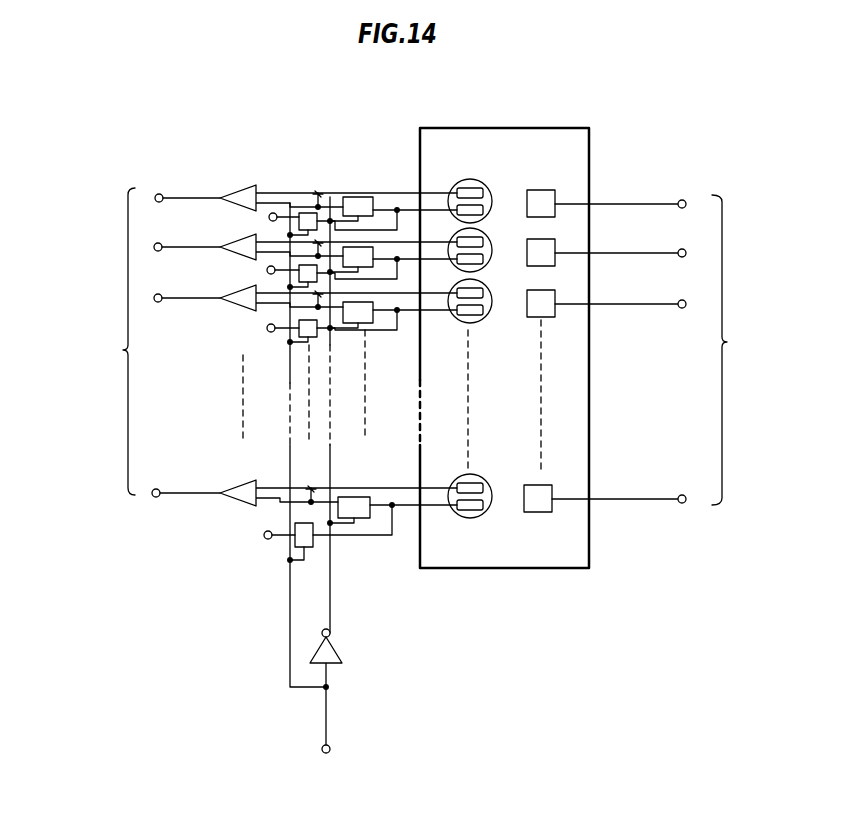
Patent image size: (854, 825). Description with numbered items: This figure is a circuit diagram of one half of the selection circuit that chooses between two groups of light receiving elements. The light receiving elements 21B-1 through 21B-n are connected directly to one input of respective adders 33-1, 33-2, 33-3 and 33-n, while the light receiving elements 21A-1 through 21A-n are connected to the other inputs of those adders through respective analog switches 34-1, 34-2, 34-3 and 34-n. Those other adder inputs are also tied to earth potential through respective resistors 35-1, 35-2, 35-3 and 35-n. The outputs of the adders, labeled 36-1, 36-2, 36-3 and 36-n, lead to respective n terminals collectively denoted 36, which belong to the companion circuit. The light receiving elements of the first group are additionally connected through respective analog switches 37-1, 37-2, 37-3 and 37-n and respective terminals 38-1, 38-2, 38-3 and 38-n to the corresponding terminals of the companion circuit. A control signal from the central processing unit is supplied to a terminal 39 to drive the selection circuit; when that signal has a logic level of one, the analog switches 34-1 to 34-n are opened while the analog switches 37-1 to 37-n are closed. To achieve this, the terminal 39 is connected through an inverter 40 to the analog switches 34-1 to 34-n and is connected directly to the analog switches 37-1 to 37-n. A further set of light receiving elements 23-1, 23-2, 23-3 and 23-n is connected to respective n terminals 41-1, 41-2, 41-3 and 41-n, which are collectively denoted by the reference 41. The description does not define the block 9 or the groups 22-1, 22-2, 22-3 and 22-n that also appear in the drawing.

The relay unit housing 9 is at (557, 570).
The terminals 36 is at (111, 341).
The terminals 41 is at (734, 350).
The adder output 36-1 is at (158, 194).
The adder output 36-2 is at (157, 243).
The adder output 36-3 is at (157, 294).
The adder output 36-n is at (155, 497).
The adder 33-1 is at (233, 191).
The adder 33-2 is at (235, 241).
The adder 33-3 is at (235, 292).
The adder 33-n is at (227, 499).
The analog switch 37-1 is at (312, 200).
The analog switch 37-2 is at (316, 258).
The analog switch 37-3 is at (316, 309).
The analog switch 37-n is at (294, 546).
The terminal 38-1 is at (270, 213).
The terminal 38-2 is at (268, 274).
The terminal 38-3 is at (267, 331).
The terminal 38-n is at (265, 538).
The resistor 35-1 is at (303, 212).
The resistor 35-2 is at (316, 283).
The resistor 35-3 is at (320, 338).
The resistor 35-n is at (295, 500).
The analog switch 34-1 is at (346, 197).
The analog switch 34-2 is at (365, 247).
The analog switch 34-3 is at (363, 311).
The analog switch 34-n is at (367, 480).
The light receiving element 21A-1 is at (455, 194).
The light receiving element 21B-1 is at (458, 207).
The light receiving element 21A-n is at (467, 511).
The light receiving element 21B-n is at (470, 467).
The relay contact pair 22-1 is at (482, 183).
The relay contact pair 22-2 is at (489, 238).
The relay contact pair 22-3 is at (488, 320).
The relay contact pair 22-n is at (488, 510).
The light receiving element 23-1 is at (555, 190).
The light receiving element 23-2 is at (555, 240).
The light receiving element 23-3 is at (555, 291).
The light receiving element 23-n is at (538, 485).
The terminal 41-1 is at (683, 200).
The terminal 41-2 is at (688, 240).
The terminal 41-3 is at (688, 293).
The terminal 41-n is at (683, 503).
The inverter 40 is at (342, 651).
The terminal 39 is at (330, 749).